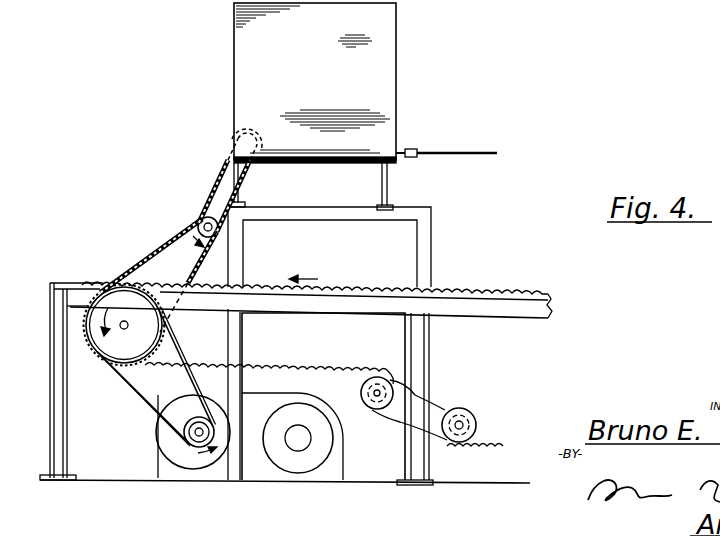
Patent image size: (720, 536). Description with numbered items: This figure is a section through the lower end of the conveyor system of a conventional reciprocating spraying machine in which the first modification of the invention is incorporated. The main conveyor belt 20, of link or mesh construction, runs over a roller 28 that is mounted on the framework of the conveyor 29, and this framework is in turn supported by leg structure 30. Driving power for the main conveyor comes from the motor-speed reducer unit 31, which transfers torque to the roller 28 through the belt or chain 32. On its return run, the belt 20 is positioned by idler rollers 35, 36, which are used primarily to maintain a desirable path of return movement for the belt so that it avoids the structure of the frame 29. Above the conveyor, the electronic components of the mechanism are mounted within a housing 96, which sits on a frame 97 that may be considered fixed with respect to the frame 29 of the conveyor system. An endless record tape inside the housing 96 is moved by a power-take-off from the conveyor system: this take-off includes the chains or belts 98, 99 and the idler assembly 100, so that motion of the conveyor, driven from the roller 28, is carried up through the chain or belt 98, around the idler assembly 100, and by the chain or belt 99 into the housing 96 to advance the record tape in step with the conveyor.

The main conveyor belt 20 is at (330, 372).
The roller 28 is at (120, 307).
The framework of the conveyor 29 is at (292, 304).
The leg structure 30 is at (62, 432).
The motor-speed reducer unit 31 is at (333, 455).
The belt or chain 32 is at (172, 352).
The idler roller 35 is at (470, 422).
The idler roller 36 is at (377, 403).
The housing 96 is at (389, 68).
The frame 97 is at (431, 238).
The chain or belt 98 is at (163, 248).
The chain or belt 99 is at (223, 167).
The idler assembly 100 is at (204, 218).